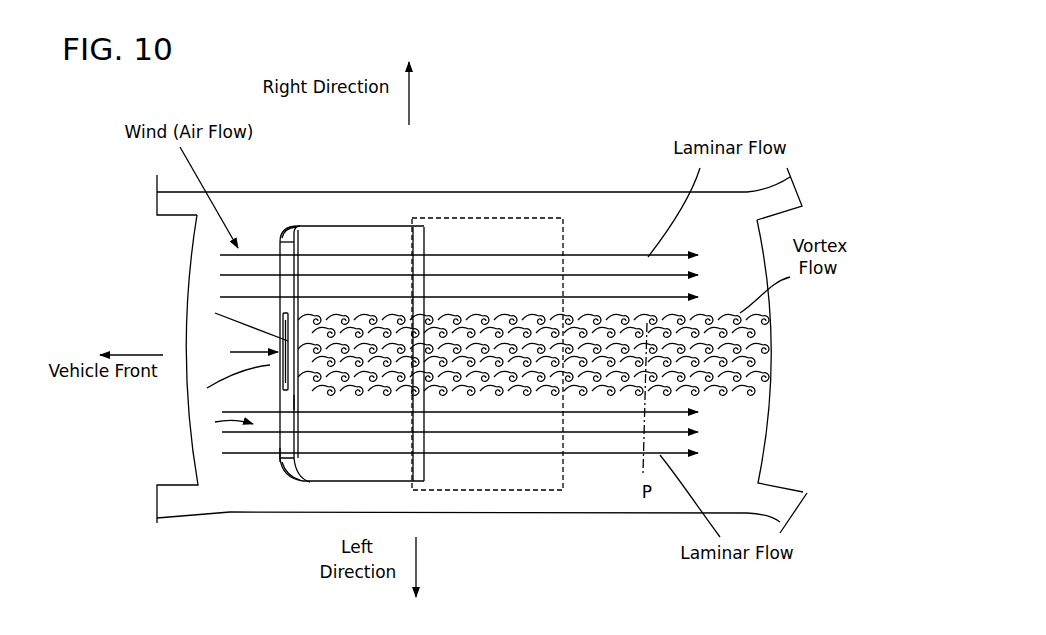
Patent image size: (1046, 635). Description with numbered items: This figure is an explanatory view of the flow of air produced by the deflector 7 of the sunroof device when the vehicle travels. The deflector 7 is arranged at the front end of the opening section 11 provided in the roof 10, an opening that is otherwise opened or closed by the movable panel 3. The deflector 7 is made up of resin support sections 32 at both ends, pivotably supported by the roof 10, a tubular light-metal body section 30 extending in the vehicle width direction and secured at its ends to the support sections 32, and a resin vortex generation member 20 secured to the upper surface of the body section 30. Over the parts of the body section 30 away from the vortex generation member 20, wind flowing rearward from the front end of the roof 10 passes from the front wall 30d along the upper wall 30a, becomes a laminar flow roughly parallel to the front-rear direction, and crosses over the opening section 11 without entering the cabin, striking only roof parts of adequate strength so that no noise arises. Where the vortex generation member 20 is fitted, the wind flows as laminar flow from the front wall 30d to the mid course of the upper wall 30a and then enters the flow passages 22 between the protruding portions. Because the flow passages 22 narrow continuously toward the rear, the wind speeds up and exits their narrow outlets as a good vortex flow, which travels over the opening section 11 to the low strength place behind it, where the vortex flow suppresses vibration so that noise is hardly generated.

The movable panel 3 is at (518, 242).
The deflector 7 is at (227, 424).
The roof 10 is at (645, 237).
The opening section 11 is at (369, 268).
The vortex generation member 20 is at (288, 341).
The flow passages 22 is at (278, 332).
The body section 30 is at (282, 265).
The upper wall 30a is at (288, 443).
The front wall 30d is at (278, 403).
The support sections 32 is at (286, 232).